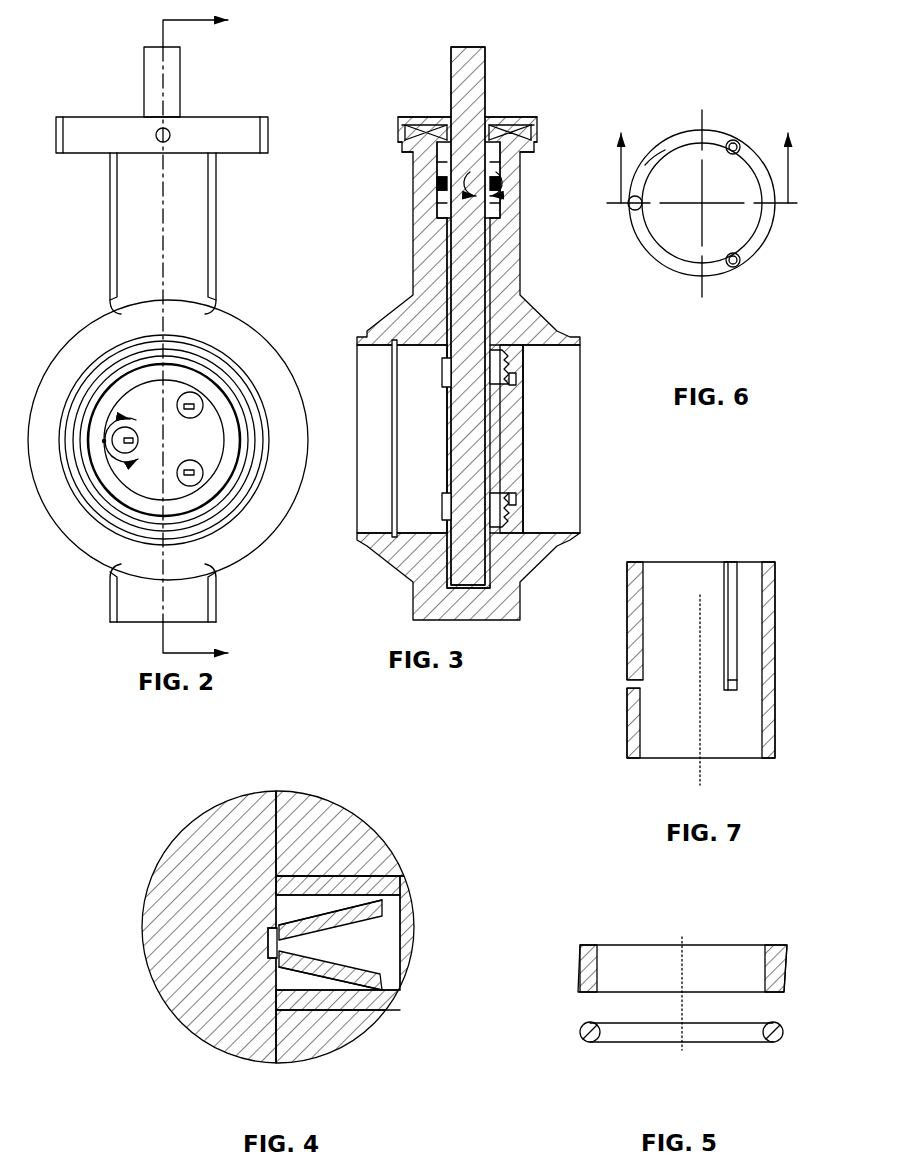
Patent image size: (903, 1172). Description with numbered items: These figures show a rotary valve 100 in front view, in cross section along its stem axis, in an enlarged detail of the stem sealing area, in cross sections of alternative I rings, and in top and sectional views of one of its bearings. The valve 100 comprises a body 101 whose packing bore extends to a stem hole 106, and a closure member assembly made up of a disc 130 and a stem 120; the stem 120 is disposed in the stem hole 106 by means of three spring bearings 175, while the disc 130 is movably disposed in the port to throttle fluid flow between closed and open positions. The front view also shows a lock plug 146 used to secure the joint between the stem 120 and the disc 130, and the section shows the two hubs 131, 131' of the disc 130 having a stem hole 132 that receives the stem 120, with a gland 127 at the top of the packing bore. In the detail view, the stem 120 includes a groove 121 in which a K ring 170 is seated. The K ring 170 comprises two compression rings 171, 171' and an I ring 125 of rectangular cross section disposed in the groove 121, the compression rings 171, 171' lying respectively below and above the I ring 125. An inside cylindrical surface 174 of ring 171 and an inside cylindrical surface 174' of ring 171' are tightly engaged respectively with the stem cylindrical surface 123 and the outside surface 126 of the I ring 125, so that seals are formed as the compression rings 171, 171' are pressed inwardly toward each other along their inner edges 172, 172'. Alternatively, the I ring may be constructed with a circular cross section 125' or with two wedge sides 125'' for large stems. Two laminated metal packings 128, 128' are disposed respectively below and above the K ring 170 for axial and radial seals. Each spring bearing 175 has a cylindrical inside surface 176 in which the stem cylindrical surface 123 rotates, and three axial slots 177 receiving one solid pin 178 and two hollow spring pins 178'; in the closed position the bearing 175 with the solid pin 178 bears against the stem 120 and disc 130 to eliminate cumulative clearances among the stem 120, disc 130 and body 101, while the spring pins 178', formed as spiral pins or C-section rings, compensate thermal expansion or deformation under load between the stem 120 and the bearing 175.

In FIG. 2, the valve 100 is at (127, 90).
In FIG. 3, the body 101 is at (500, 268).
In FIG. 3, the stem hole 106 is at (450, 298).
In FIG. 3, the stem 120 is at (472, 108).
In FIG. 4, the stem 120 is at (200, 961).
In FIG. 4, the groove 121 is at (272, 940).
In FIG. 4, the stem cylindrical surface 123 is at (273, 933).
In FIG. 4, the I ring 125 is at (181, 981).
In FIG. 5, the I ring with circular cross section 125' is at (682, 969).
In FIG. 5, the I ring with wedge sides 125'' is at (681, 1056).
In FIG. 4, the outside surface of I ring 126 is at (268, 947).
In FIG. 3, the gland flange 127 is at (428, 130).
In FIG. 4, the laminated metal packing 128 is at (346, 803).
In FIG. 4, the laminated metal packing 128' is at (298, 1067).
In FIG. 3, the disc 130 is at (498, 475).
In FIG. 3, the hub 131 is at (375, 433).
In FIG. 3, the hub 131' is at (390, 553).
In FIG. 3, the stem hole of disc 132 is at (485, 382).
In FIG. 2, the lock plug 146 is at (122, 426).
In FIG. 4, the K ring 170 is at (200, 788).
In FIG. 4, the compression ring 171 is at (375, 933).
In FIG. 4, the compression ring 171' is at (378, 1000).
In FIG. 4, the upper finger edge 172 is at (365, 876).
In FIG. 4, the lower finger edge 172' is at (369, 1025).
In FIG. 4, the inside cylindrical surface of ring 171 174 is at (353, 862).
In FIG. 4, the inside cylindrical surface of ring 171' 174' is at (356, 1037).
In FIG. 3, the spring bearing 175 is at (447, 255).
In FIG. 6, the spring bearing 175 is at (718, 100).
In FIG. 7, the spring bearing 175 is at (740, 537).
In FIG. 6, the cylindrical inside surface 176 is at (665, 150).
In FIG. 7, the cylindrical inside surface 176 is at (762, 650).
In FIG. 6, the axial slot 177 is at (740, 145).
In FIG. 7, the solid pin 178 is at (675, 622).
In FIG. 6, the spring pin 178' is at (734, 199).